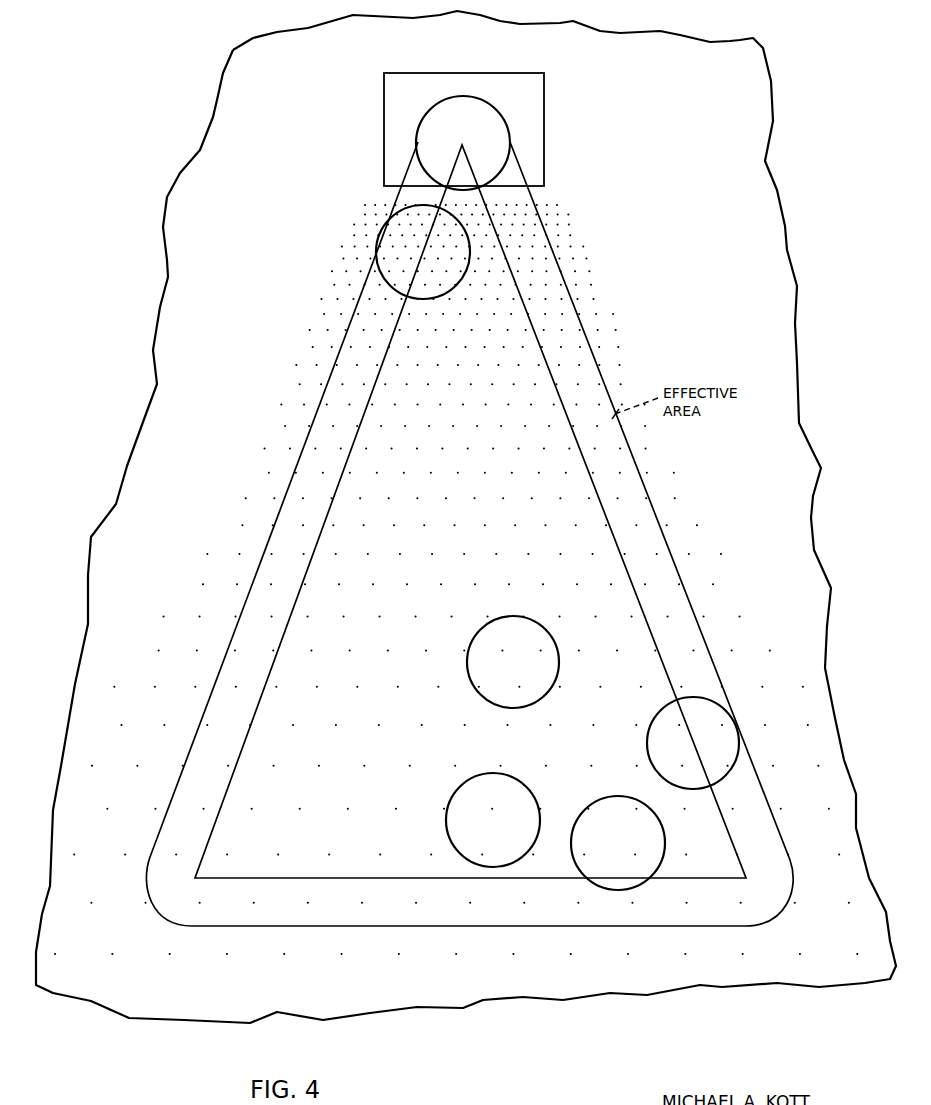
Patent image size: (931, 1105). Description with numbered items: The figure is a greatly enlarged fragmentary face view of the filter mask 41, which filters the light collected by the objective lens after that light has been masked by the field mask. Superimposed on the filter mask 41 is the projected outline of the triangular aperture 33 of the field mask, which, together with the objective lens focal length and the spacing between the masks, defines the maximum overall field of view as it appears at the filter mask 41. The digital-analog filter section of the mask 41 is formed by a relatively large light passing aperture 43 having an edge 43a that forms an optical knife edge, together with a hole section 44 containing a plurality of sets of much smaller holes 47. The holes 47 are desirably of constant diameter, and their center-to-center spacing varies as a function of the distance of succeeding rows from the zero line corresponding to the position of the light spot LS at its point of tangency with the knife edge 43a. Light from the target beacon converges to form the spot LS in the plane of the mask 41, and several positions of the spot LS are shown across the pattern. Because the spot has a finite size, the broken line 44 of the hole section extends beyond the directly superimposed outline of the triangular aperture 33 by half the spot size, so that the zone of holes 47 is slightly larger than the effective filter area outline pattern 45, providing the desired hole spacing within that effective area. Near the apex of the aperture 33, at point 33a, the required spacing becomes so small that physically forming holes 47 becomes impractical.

The filter mask 41 is at (767, 264).
The light passing aperture 43 is at (538, 101).
The knife edge 43a is at (392, 185).
The light source point 33a is at (470, 127).
The triangular aperture 33 is at (469, 534).
The effective filter area outline pattern 45 is at (321, 408).
The hole section 44 is at (278, 469).
The holes 47 is at (580, 290).
The light spot LS is at (719, 699).